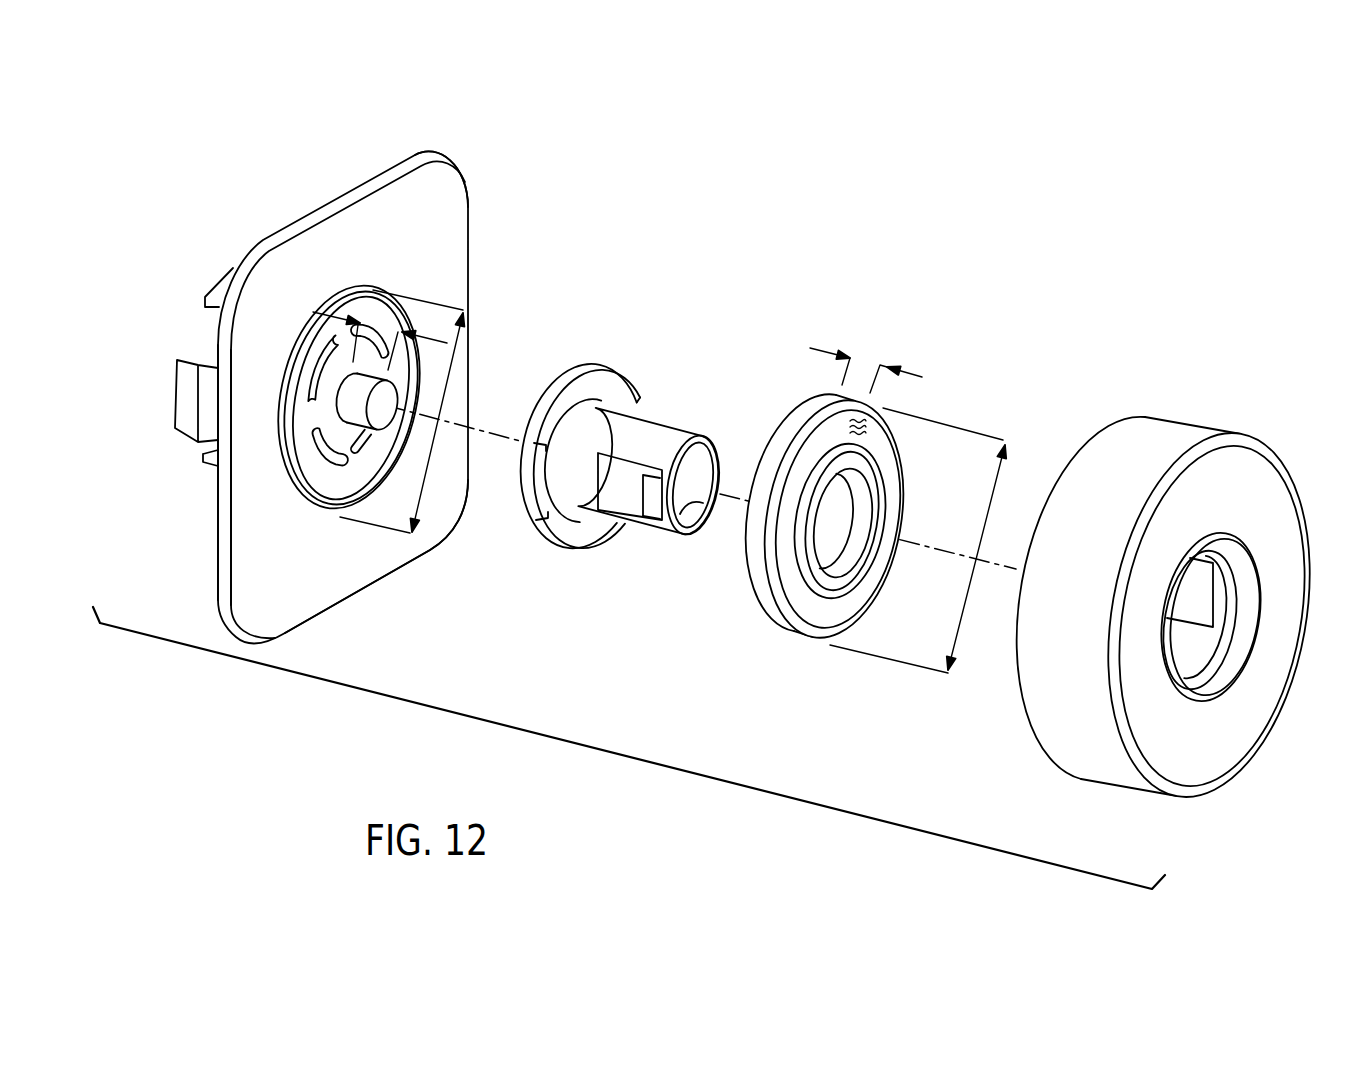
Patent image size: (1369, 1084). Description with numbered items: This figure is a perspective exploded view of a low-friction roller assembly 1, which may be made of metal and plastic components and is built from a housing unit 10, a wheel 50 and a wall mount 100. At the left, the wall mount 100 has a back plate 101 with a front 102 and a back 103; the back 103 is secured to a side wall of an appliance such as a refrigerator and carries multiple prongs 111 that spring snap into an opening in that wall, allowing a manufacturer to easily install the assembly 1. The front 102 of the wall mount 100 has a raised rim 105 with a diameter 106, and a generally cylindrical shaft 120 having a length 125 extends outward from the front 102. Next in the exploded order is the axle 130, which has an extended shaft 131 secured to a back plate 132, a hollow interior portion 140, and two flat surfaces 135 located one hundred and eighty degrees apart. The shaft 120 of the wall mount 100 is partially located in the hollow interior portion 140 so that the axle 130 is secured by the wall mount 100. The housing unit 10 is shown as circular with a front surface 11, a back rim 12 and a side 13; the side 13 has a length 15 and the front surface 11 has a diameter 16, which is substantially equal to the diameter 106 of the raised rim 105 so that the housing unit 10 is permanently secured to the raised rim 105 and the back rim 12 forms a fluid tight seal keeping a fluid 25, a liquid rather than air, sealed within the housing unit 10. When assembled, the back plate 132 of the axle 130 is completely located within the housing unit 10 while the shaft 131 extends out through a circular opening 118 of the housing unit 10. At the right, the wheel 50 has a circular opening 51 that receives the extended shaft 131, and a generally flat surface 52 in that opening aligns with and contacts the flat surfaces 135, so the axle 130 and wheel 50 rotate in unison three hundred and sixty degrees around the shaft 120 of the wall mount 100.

The low-friction roller assembly 1 is at (852, 180).
The housing unit 10 is at (876, 516).
The front surface 11 is at (873, 417).
The back rim 12 is at (783, 428).
The side 13 is at (773, 620).
The length 15 is at (915, 375).
The diameter 16 is at (964, 610).
The fluid 25 is at (866, 431).
The wheel 50 is at (1177, 598).
The circular opening 51 is at (1192, 647).
The generally flat surface 52 is at (1200, 590).
The wall mount 100 is at (325, 373).
The back plate 101 is at (442, 172).
The front 102 is at (447, 236).
The back 103 is at (215, 332).
The raised rim 105 is at (347, 502).
The diameter 106 is at (427, 470).
The prongs 111 is at (183, 408).
The circular opening 118 is at (868, 506).
The generally cylindrical shaft 120 is at (340, 394).
The length 125 is at (346, 304).
The axle 130 is at (638, 450).
The extended shaft 131 is at (656, 427).
The back plate 132 is at (548, 538).
The flat surface 135 is at (718, 470).
The hollow interior portion 140 is at (690, 505).